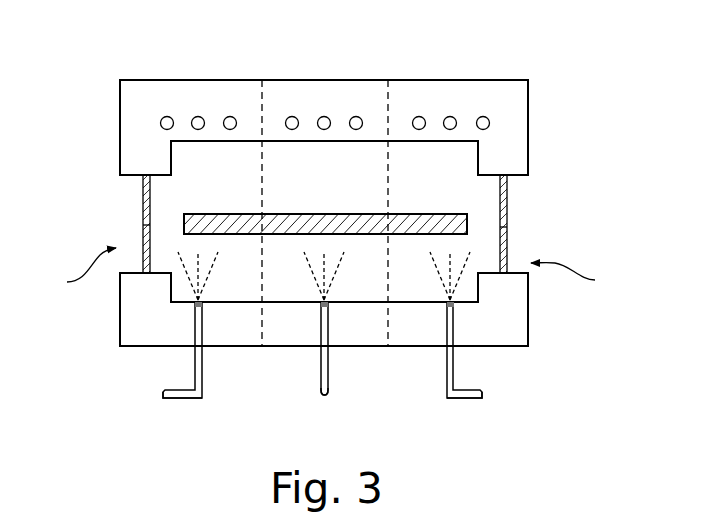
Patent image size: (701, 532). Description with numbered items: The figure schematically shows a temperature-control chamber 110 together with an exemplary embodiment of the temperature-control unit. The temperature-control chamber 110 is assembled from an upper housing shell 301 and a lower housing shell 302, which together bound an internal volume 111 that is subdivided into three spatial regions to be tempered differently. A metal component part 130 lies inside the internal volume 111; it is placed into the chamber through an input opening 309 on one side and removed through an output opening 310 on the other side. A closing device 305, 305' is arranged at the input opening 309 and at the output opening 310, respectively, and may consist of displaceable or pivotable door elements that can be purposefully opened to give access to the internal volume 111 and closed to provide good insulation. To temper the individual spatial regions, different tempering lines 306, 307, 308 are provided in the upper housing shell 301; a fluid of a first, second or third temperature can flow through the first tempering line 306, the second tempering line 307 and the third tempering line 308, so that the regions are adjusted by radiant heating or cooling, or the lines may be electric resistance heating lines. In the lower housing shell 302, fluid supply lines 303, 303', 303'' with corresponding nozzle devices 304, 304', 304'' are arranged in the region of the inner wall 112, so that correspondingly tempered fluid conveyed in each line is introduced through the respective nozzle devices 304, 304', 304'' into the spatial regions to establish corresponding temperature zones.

The temperature-control chamber 110 is at (562, 61).
The internal volume 111 is at (160, 200).
The inner wall 112 is at (270, 149).
The metal component part 130 is at (467, 222).
The upper housing shell 301 is at (520, 127).
The lower housing shell 302 is at (510, 292).
The fluid supply line 303 is at (165, 444).
The fluid supply line 303' is at (275, 421).
The fluid supply line 303'' is at (490, 443).
The nozzle device 304 is at (135, 325).
The nozzle device 304' is at (279, 323).
The nozzle device 304'' is at (414, 325).
The closing device 305 is at (88, 226).
The closing device 305' is at (566, 226).
The first tempering line 306 is at (230, 116).
The second tempering line 307 is at (356, 116).
The third tempering line 308 is at (483, 116).
The input opening 309 is at (68, 271).
The output opening 310 is at (586, 278).